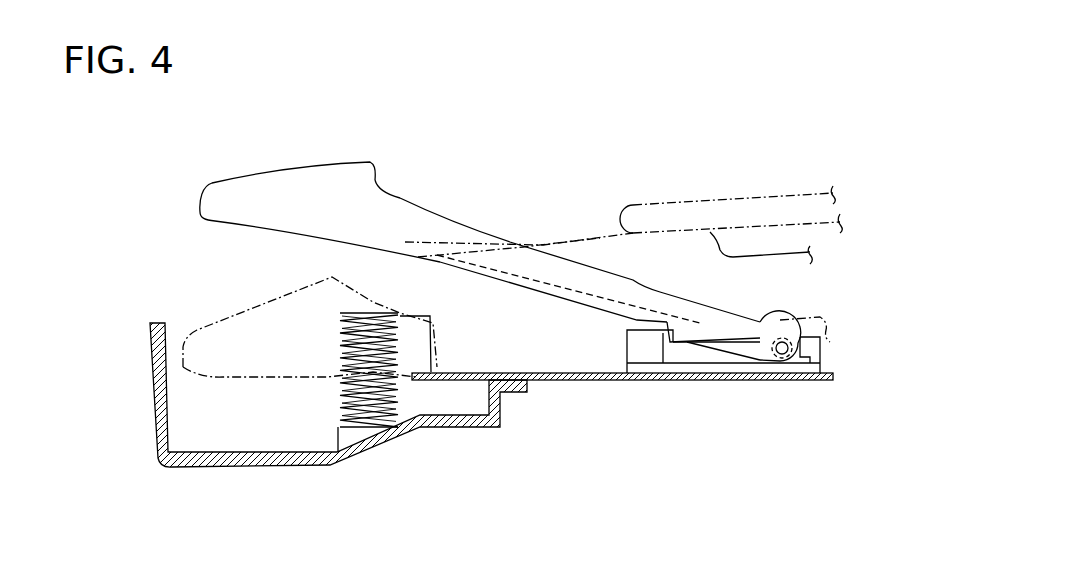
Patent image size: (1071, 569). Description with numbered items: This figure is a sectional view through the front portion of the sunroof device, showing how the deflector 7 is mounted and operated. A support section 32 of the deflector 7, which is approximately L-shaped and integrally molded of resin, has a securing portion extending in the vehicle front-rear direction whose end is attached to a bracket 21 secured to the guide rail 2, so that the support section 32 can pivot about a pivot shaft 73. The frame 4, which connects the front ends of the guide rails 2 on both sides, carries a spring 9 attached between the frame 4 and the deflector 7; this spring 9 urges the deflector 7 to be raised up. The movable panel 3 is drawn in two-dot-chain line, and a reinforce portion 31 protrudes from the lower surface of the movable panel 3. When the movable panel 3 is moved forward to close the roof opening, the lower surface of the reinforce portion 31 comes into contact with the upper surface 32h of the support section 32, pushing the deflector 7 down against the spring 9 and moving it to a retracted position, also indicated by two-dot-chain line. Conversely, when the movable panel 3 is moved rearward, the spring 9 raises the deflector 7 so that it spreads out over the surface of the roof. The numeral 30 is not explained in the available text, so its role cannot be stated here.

The guide rail 2 is at (614, 380).
The movable panel 3 is at (690, 210).
The frame 4 is at (150, 430).
The deflector 7 is at (413, 171).
The spring 9 is at (417, 422).
The bracket 21 is at (690, 355).
The pedal pad 30 is at (265, 172).
The reinforce portion 31 is at (712, 245).
The support section 32 is at (543, 280).
The upper surface 32h is at (592, 268).
The pivot shaft 73 is at (781, 358).